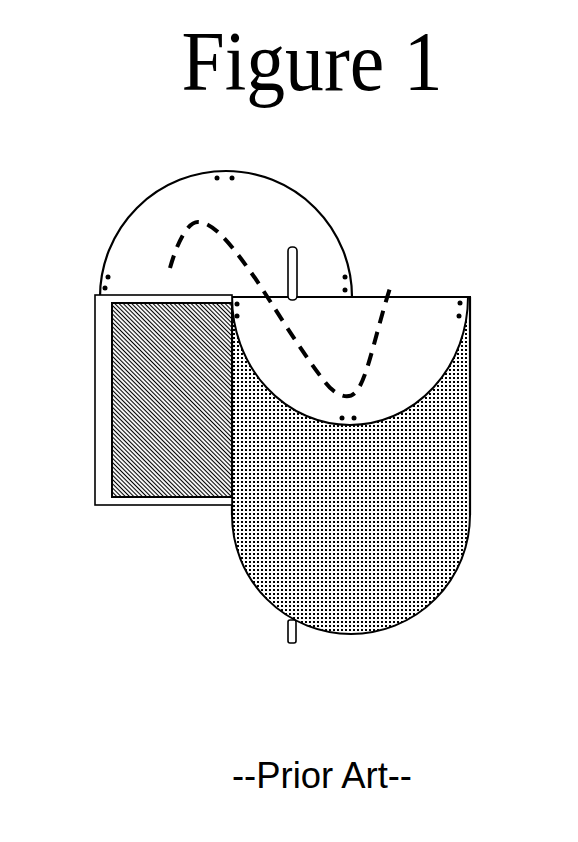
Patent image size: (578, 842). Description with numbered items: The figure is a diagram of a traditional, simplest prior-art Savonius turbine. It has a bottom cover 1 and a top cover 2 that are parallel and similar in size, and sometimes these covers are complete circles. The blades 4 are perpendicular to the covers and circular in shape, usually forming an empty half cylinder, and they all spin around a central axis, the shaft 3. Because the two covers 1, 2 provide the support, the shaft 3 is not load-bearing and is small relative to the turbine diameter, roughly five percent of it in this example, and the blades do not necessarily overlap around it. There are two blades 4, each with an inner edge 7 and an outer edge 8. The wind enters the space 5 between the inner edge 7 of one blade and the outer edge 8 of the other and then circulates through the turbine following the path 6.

The bottom cover 1 is at (138, 508).
The top cover 2 is at (402, 340).
The central axis (shaft) 3 is at (292, 652).
The blades 4 is at (427, 522).
The space 5 is at (155, 388).
The path 6 is at (281, 309).
The inner edge 7 is at (243, 406).
The outer edge 8 is at (483, 406).